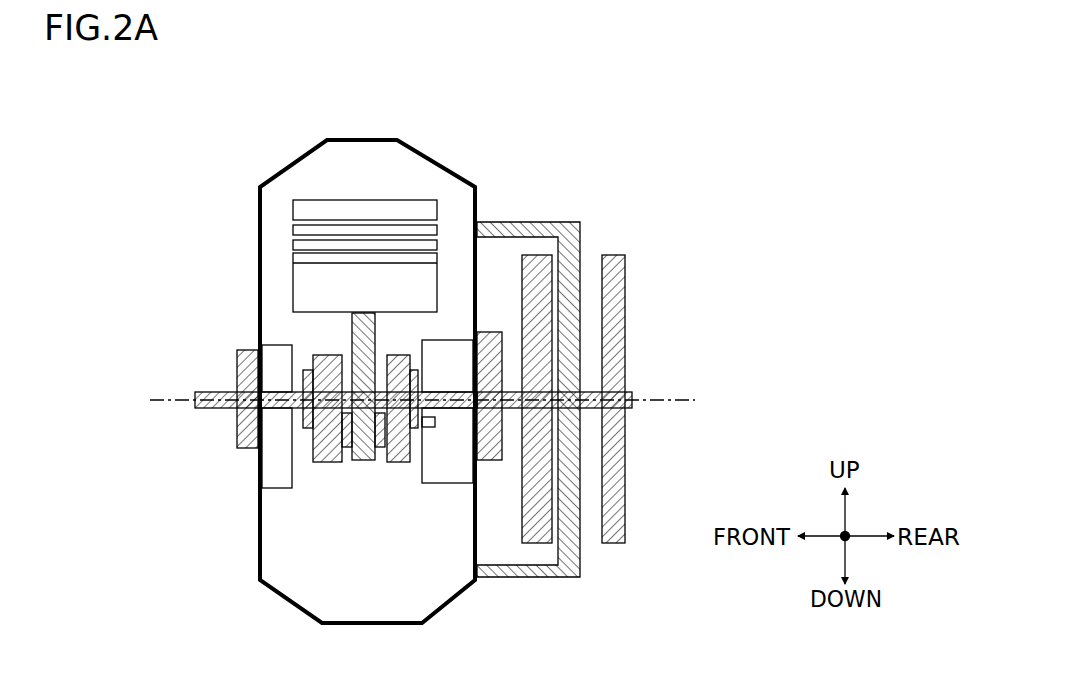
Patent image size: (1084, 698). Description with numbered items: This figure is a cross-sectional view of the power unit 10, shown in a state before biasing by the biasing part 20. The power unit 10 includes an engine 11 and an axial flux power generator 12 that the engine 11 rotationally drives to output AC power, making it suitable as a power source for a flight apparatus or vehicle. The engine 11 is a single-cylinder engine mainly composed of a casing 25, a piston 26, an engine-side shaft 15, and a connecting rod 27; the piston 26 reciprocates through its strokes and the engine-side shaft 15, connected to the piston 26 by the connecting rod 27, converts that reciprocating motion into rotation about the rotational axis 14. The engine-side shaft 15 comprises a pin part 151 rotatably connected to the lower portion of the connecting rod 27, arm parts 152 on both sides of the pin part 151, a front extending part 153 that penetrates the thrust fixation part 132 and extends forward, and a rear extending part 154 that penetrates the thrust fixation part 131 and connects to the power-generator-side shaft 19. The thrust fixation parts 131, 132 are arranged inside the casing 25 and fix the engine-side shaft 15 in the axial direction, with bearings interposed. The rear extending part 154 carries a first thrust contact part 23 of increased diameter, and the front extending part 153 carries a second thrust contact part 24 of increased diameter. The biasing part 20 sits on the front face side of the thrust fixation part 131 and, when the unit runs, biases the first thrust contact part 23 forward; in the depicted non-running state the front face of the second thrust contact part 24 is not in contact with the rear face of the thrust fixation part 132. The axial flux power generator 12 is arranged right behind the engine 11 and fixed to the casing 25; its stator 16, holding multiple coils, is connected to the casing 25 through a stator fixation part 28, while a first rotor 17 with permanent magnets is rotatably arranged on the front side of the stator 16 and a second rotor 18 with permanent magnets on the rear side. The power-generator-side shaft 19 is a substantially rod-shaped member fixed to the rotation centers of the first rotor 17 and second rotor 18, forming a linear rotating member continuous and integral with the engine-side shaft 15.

The power unit 10 is at (206, 150).
The engine 11 is at (369, 128).
The axial flux power generator 12 is at (544, 157).
The rotational axis 14 is at (172, 385).
The engine-side shaft 15 is at (195, 408).
The stator 16 is at (580, 228).
The first rotor 17 is at (535, 545).
The second rotor 18 is at (615, 545).
The power-generator-side shaft 19 is at (632, 392).
The biasing part 20 is at (433, 428).
The first thrust contact part 23 is at (417, 430).
The second thrust contact part 24 is at (304, 430).
The casing 25 is at (258, 512).
The piston 26 is at (293, 232).
The connecting rod 27 is at (350, 322).
The stator fixation part 28 is at (498, 222).
The thrust fixation part 131 is at (468, 483).
The thrust fixation part 132 is at (282, 490).
The pin part 151 is at (348, 447).
The arm parts 152 is at (322, 463).
The front extending part 153 is at (297, 390).
The rear extending part 154 is at (430, 388).